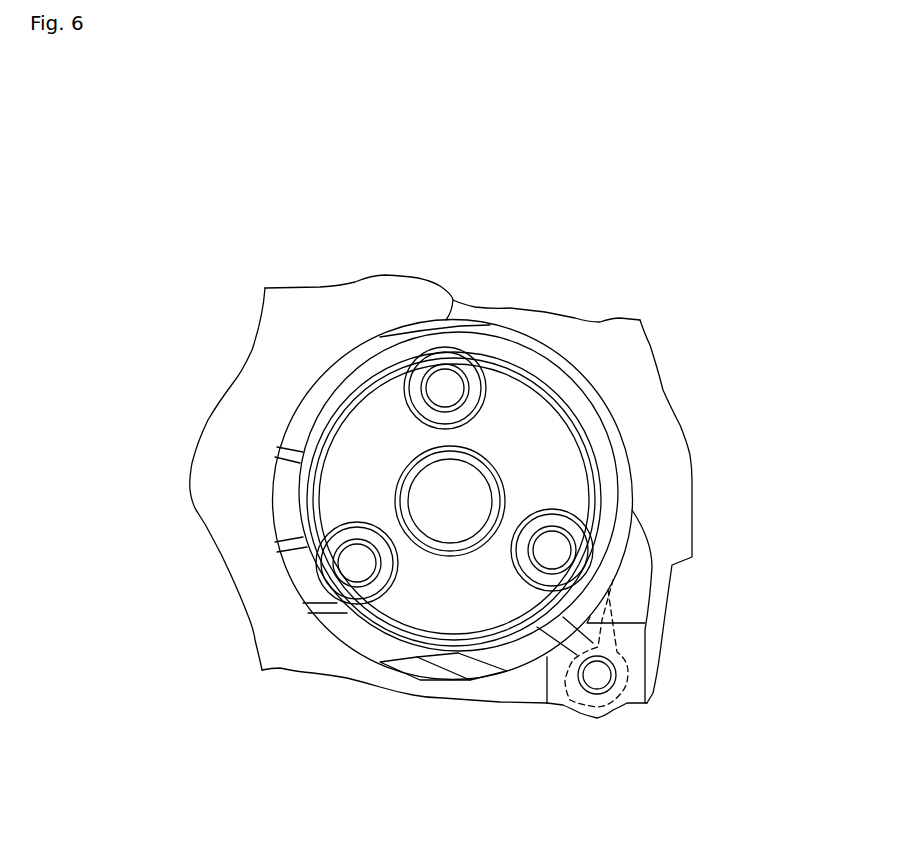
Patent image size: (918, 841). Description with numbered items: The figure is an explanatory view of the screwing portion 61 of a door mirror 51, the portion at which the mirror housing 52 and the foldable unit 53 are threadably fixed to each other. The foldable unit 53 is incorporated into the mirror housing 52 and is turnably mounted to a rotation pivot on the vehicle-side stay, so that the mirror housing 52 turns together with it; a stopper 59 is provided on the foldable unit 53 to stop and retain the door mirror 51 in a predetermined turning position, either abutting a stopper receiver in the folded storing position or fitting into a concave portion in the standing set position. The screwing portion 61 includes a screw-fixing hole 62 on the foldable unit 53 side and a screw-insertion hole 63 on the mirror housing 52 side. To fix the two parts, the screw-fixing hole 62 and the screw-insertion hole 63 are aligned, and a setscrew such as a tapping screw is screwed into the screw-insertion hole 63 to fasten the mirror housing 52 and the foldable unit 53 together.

The door mirror 51 is at (228, 350).
The mirror housing 52 is at (663, 392).
The foldable unit 53 is at (437, 333).
The stopper 59 is at (283, 517).
The screwing portion 61 is at (633, 683).
The screw-fixing hole 62 is at (600, 682).
The screw-insertion hole 63 is at (577, 685).